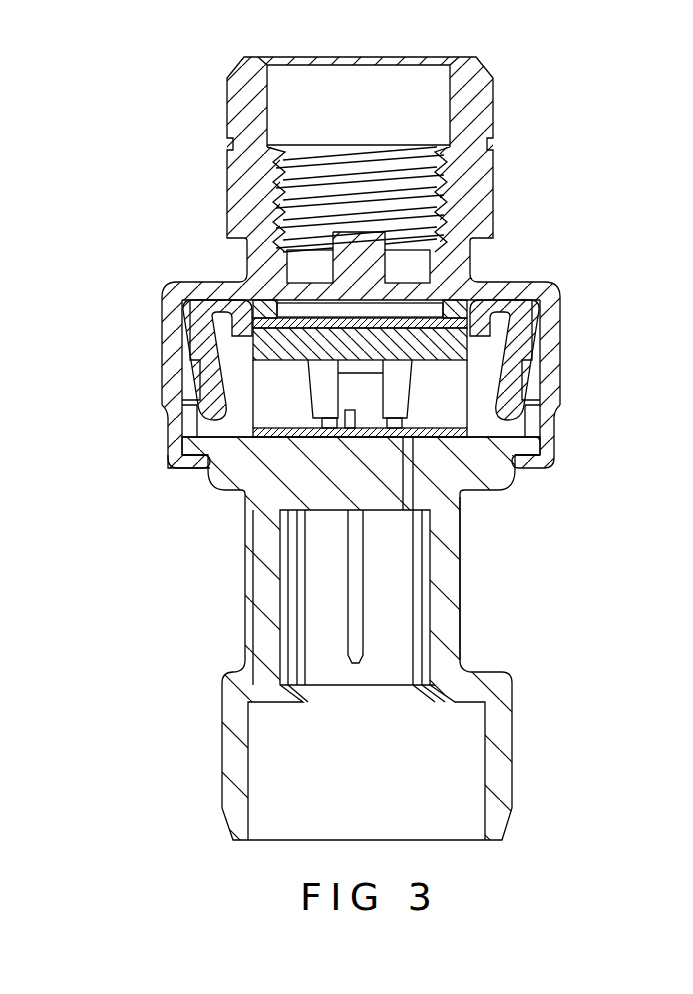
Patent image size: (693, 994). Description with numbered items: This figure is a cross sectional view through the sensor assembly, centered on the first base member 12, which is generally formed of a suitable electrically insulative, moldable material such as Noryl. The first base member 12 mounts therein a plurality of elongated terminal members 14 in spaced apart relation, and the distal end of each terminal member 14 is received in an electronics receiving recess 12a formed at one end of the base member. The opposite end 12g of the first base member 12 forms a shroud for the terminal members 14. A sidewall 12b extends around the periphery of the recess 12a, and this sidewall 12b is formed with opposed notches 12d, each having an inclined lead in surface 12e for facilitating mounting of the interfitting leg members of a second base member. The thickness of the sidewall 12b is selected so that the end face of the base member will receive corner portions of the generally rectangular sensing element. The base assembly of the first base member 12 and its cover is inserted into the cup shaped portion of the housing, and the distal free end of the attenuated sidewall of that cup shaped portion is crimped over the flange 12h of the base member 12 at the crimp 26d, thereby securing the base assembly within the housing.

The first base member 12 is at (462, 600).
The electronics receiving recess 12a is at (357, 388).
The sidewall 12b is at (530, 370).
The opposed notches 12d is at (190, 422).
The inclined lead in surface 12e is at (197, 368).
The opposite end of base member 12g is at (453, 628).
The flange 12h is at (190, 445).
The terminal members 14 is at (358, 661).
The crimp 26d is at (187, 465).